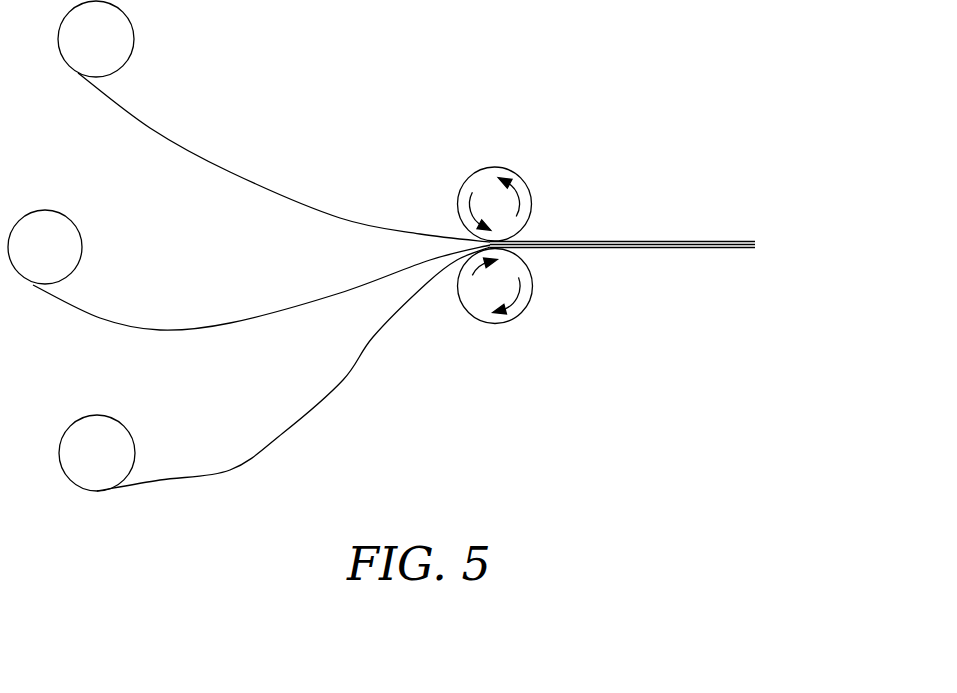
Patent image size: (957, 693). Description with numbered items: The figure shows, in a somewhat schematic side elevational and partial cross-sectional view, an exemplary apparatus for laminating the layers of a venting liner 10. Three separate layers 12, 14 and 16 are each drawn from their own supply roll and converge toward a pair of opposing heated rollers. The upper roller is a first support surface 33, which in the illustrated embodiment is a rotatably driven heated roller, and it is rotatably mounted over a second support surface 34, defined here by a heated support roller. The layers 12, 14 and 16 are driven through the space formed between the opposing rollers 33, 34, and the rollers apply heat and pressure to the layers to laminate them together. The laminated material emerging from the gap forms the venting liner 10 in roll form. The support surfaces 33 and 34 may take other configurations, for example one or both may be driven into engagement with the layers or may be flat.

The venting liner 10 is at (695, 230).
The layer 12 is at (268, 188).
The layer 14 is at (318, 408).
The layer 16 is at (257, 320).
The first support surface 33 is at (494, 167).
The second support surface 34 is at (494, 323).